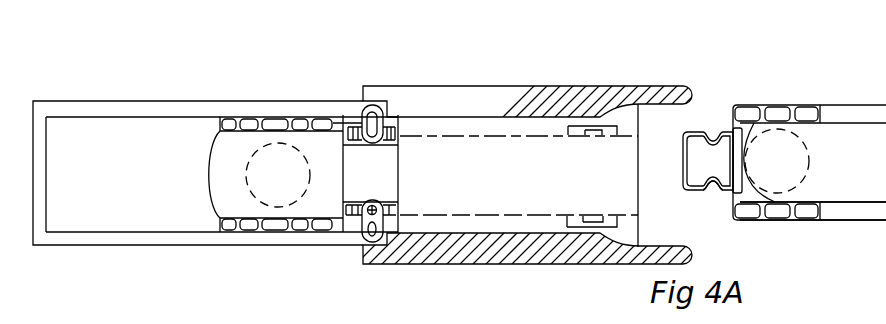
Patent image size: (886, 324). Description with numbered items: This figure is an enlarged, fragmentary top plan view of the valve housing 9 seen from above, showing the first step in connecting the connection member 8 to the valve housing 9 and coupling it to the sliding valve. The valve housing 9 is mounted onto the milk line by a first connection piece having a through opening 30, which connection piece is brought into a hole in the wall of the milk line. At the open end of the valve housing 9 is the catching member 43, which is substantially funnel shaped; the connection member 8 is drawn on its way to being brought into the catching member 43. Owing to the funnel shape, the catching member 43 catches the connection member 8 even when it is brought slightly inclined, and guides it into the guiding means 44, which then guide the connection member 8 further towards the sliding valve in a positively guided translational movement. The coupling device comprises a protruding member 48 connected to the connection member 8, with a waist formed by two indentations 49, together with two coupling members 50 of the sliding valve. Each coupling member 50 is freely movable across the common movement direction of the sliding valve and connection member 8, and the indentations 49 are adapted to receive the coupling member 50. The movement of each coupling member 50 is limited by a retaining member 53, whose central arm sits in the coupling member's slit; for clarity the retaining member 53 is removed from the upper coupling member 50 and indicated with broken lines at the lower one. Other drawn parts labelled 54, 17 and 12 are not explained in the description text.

The valve housing 9 is at (334, 76).
The through opening 30 is at (289, 184).
The coupling member 50 is at (378, 106).
The retaining member 53 is at (350, 216).
The lower bearing ring 54 is at (362, 242).
The catching member 43 is at (697, 109).
The guiding means 44 is at (512, 232).
The protruding member 48 is at (723, 171).
The indentations 49 is at (713, 187).
The connection member 8 is at (796, 98).
The piston 17 is at (789, 170).
The lower rail 12 is at (783, 221).